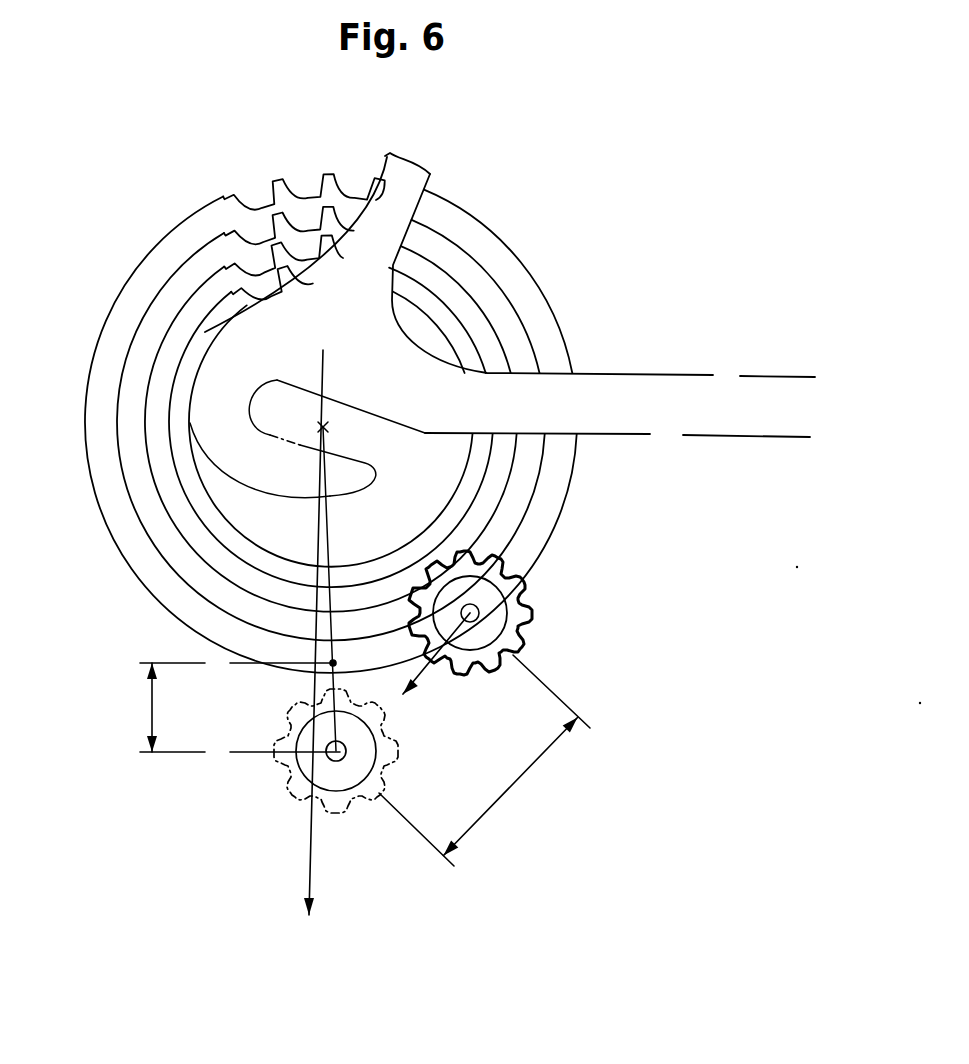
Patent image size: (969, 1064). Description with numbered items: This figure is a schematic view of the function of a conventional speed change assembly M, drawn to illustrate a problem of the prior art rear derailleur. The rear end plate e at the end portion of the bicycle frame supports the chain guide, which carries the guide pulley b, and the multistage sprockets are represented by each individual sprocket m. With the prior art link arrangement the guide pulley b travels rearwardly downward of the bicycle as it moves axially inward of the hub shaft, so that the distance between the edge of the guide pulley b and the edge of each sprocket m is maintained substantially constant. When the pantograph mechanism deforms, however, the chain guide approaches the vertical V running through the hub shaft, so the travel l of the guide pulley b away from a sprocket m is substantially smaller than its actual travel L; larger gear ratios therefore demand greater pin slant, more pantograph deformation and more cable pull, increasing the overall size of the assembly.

The multistage sprocket assembly M is at (386, 412).
The sprocket m is at (512, 297).
The rear end plate e is at (188, 390).
The guide pulley b is at (527, 612).
The travel of the guide pulley away from a sprocket l is at (237, 706).
The actual travel of the guide pulley L is at (484, 760).
The vertical V is at (310, 655).